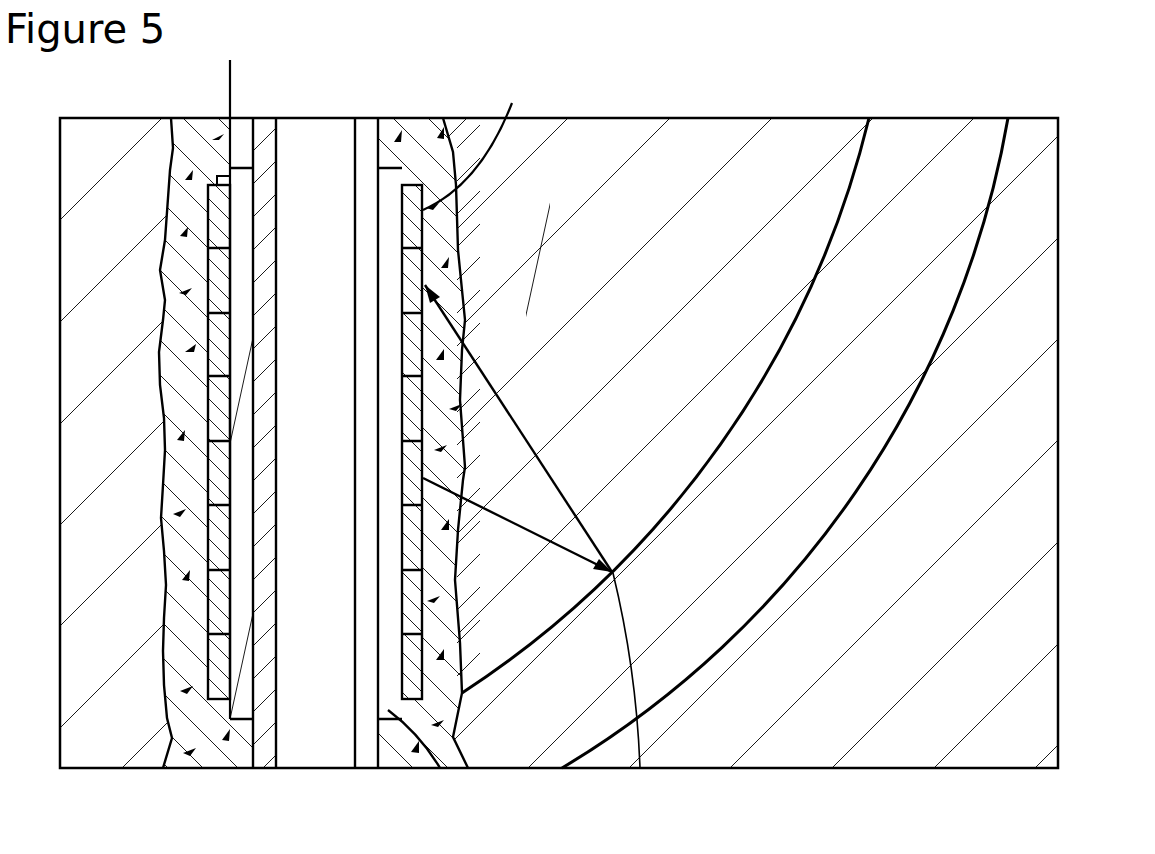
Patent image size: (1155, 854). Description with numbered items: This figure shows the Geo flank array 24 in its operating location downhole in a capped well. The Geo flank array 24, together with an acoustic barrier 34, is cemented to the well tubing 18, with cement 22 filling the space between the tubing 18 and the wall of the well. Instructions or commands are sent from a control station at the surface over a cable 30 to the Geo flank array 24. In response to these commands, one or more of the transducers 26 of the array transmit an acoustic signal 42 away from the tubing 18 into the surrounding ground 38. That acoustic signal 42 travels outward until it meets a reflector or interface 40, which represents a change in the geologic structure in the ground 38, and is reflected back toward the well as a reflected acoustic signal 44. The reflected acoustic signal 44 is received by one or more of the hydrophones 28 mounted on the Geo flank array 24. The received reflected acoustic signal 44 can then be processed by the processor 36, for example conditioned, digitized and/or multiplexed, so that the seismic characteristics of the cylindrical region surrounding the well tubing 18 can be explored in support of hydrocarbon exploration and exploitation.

The tubing 18 is at (265, 755).
The cement 22 is at (215, 755).
The Geo flank array 24 is at (216, 178).
The transducers 26 is at (418, 460).
The hydrophones 28 is at (418, 262).
The cable 30 is at (232, 88).
The acoustic barrier 34 is at (438, 768).
The processor 36 is at (218, 178).
The ground 38 is at (998, 433).
The reflector or interface 40 is at (640, 768).
The acoustic signal 42 is at (531, 534).
The reflected acoustic signal 44 is at (551, 474).